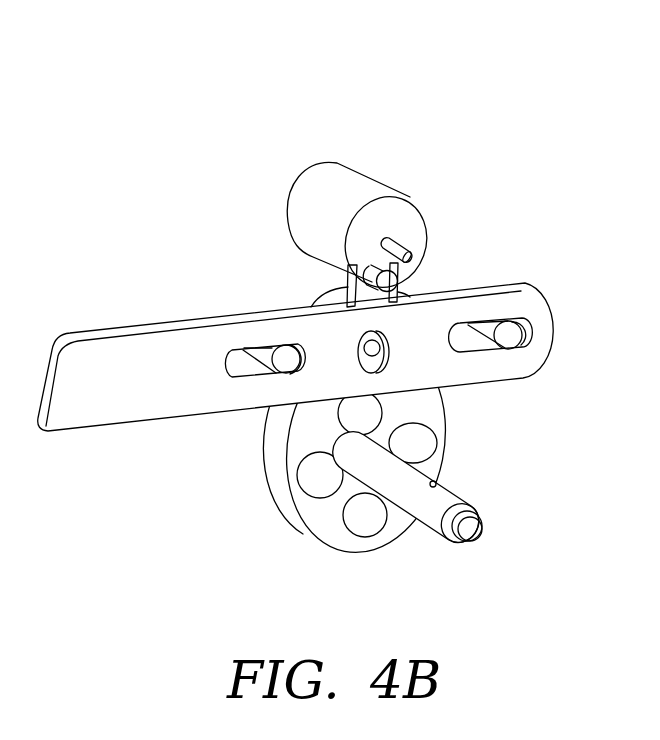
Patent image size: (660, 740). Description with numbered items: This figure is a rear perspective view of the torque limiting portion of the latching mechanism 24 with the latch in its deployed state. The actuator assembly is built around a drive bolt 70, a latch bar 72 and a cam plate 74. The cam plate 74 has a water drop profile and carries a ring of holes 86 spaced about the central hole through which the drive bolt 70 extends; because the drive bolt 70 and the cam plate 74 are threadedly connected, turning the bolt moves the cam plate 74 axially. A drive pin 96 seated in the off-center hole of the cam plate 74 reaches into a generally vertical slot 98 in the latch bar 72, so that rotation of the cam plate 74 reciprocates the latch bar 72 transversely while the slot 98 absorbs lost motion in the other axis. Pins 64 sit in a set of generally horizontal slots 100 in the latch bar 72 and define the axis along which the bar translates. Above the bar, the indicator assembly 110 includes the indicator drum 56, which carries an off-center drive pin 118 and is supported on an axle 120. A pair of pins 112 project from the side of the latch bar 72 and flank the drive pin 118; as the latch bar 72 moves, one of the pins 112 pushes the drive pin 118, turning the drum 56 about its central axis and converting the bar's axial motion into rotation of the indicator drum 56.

The latching mechanism 24 is at (262, 112).
The indicator drum 56 is at (411, 189).
The indicator assembly 110 is at (378, 228).
The axle 120 is at (393, 244).
The drive pin 118 is at (386, 282).
The pins 112 is at (344, 281).
The vertical slot 98 is at (364, 332).
The pins 64 is at (278, 365).
The horizontal slots 100 is at (254, 345).
The latch bar 72 is at (339, 331).
The drive pin 96 is at (383, 353).
The holes 86 is at (358, 414).
The cam plate 74 is at (362, 460).
The drive bolt 70 is at (470, 535).